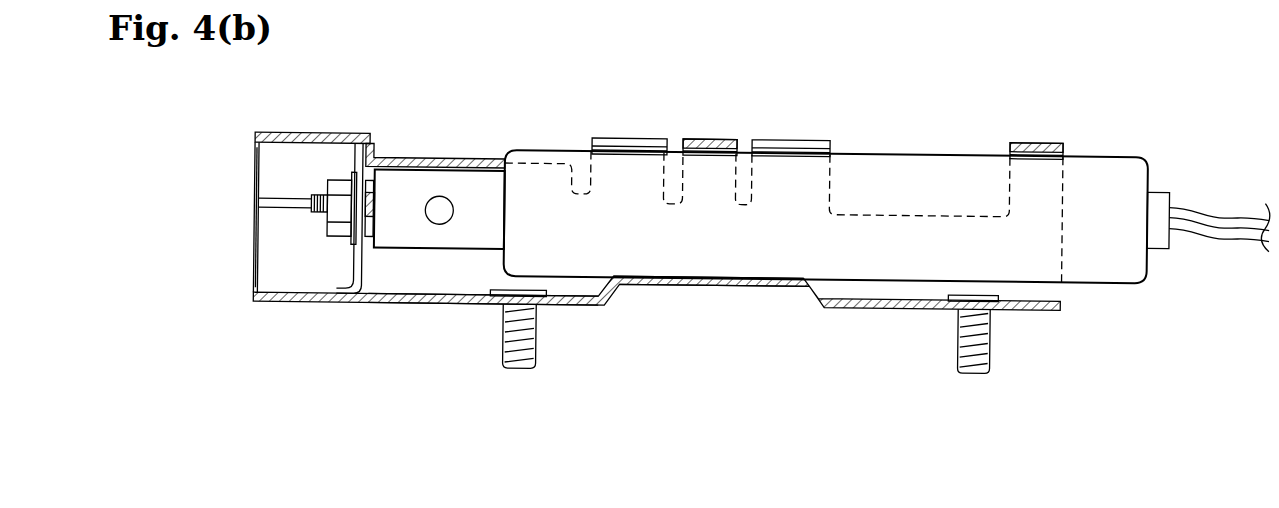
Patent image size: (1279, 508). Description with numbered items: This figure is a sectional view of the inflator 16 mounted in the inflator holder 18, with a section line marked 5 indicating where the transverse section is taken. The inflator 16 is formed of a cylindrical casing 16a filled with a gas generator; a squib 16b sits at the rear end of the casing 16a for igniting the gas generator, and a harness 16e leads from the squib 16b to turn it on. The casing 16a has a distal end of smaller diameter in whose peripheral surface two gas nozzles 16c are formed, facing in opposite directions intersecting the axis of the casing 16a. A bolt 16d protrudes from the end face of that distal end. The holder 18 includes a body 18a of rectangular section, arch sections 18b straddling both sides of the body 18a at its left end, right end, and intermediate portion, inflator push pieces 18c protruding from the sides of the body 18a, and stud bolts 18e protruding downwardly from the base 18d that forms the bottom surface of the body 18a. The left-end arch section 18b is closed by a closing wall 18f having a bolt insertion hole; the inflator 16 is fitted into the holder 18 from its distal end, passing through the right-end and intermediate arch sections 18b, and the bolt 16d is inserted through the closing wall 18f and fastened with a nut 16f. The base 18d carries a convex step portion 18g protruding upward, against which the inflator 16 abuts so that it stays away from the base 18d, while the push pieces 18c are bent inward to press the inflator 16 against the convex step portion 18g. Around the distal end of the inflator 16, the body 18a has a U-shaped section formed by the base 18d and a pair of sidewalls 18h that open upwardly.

The section line 5- 5 is at (435, 106).
The inflator 16 is at (1157, 139).
The cylindrical casing 16a is at (868, 150).
The squib 16b is at (1162, 242).
The gas nozzle 16c is at (438, 215).
The bolt 16d is at (330, 184).
The harness 16e is at (1246, 232).
The nut 16f is at (335, 239).
The inflator holder 18 is at (246, 292).
The body 18a is at (258, 230).
The arch section 18b is at (284, 135).
The inflator push piece 18c is at (612, 137).
The base 18d is at (470, 305).
The stud bolt 18e is at (540, 357).
The closing wall 18f is at (357, 145).
The convex step portion 18g is at (678, 283).
The sidewall 18h is at (468, 159).